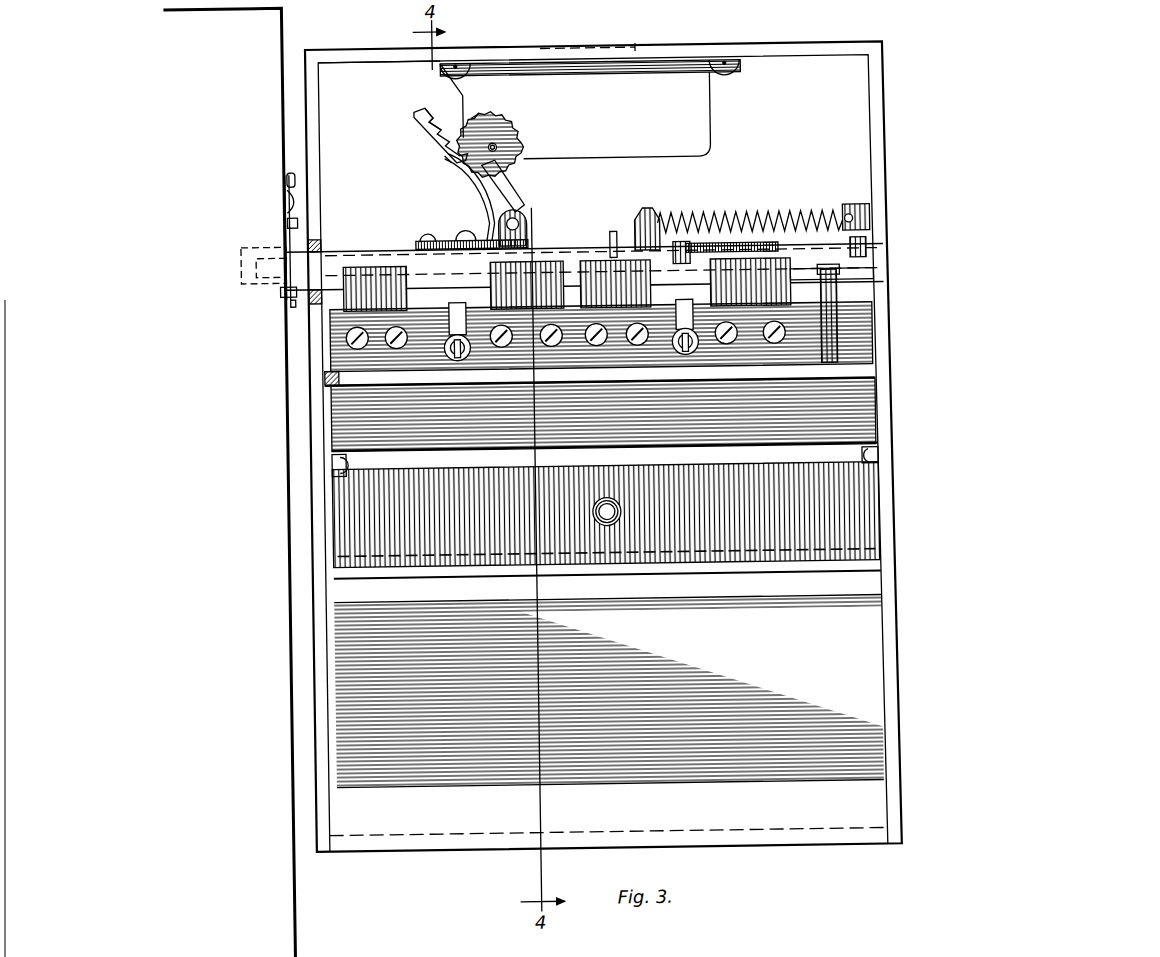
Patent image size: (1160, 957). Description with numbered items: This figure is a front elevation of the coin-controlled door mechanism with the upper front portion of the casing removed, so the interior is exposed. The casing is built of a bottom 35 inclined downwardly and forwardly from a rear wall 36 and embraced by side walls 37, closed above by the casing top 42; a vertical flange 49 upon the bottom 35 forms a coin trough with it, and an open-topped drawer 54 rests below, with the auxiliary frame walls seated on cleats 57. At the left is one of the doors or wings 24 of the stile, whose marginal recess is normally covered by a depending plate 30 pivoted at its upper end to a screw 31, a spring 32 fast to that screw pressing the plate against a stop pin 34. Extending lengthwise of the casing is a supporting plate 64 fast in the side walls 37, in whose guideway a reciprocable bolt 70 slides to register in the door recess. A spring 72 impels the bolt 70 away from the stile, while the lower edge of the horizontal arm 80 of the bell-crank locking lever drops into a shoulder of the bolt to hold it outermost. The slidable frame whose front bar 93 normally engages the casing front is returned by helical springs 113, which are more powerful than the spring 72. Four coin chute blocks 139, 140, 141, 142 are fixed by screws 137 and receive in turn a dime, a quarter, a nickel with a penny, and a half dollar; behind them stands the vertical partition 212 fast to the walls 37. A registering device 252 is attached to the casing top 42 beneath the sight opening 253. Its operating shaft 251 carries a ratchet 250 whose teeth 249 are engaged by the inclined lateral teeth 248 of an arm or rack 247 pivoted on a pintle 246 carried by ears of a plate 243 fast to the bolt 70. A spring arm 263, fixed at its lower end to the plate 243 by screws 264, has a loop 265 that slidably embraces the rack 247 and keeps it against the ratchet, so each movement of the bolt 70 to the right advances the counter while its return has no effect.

The doors or wings 24 is at (290, 890).
The casing top 42 is at (748, 47).
The side walls 37 is at (875, 163).
The vertical partition 212 is at (355, 95).
The sight opening 253 is at (597, 50).
The registering device or counter mechanism 252 is at (693, 126).
The teeth of ratchet 249 is at (522, 152).
The ratchet 250 is at (492, 122).
The operating shaft 251 is at (497, 147).
The arm or rack 247 is at (430, 140).
The inclined lateral teeth 248 is at (443, 125).
The loop 265 is at (443, 158).
The spring arm 263 is at (468, 198).
The pintle 246 is at (520, 213).
The plate 243 is at (424, 238).
The screws 264 is at (463, 234).
The bolt 70 is at (296, 262).
The depending plate 30 is at (285, 176).
The screw 31 is at (285, 204).
The spring 32 is at (290, 222).
The stop pin 34 is at (285, 293).
The coin chute block 139 is at (348, 297).
The coin chute block 140 is at (540, 268).
The coin chute block 141 is at (593, 262).
The horizontal arm 80 is at (612, 236).
The spring 72 is at (700, 216).
The coin chute block 142 is at (735, 256).
The supporting plate 64 is at (842, 277).
The screws 137 is at (343, 342).
The helical springs 113 is at (445, 362).
The front bar 93 is at (733, 370).
The cleats 57 is at (328, 462).
The drawer 54 is at (723, 542).
The rear wall 36 is at (857, 585).
The bottom 35 is at (848, 707).
The vertical flange 49 is at (865, 790).